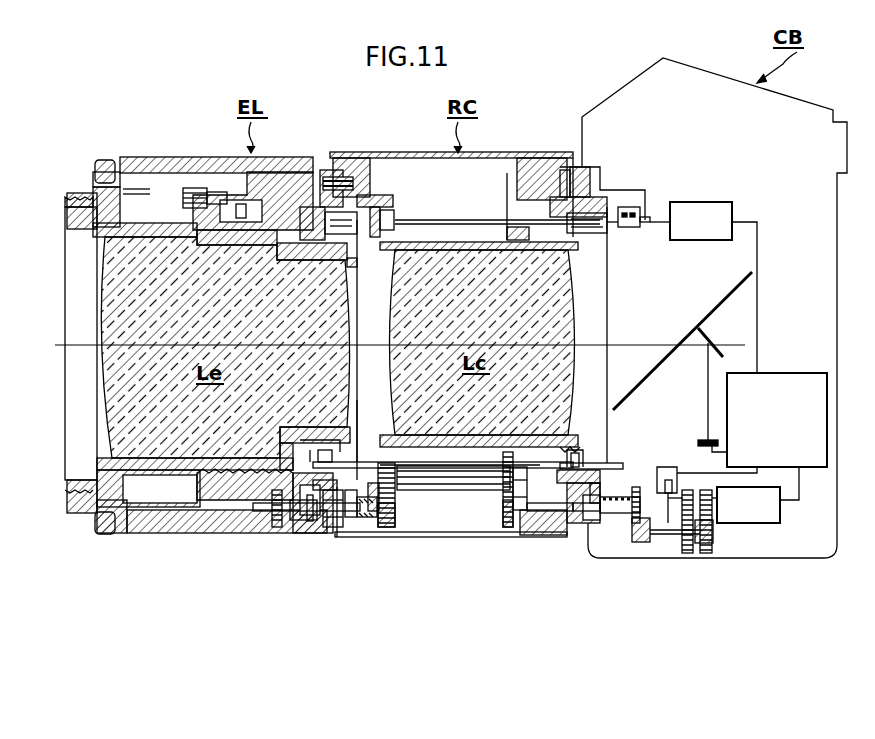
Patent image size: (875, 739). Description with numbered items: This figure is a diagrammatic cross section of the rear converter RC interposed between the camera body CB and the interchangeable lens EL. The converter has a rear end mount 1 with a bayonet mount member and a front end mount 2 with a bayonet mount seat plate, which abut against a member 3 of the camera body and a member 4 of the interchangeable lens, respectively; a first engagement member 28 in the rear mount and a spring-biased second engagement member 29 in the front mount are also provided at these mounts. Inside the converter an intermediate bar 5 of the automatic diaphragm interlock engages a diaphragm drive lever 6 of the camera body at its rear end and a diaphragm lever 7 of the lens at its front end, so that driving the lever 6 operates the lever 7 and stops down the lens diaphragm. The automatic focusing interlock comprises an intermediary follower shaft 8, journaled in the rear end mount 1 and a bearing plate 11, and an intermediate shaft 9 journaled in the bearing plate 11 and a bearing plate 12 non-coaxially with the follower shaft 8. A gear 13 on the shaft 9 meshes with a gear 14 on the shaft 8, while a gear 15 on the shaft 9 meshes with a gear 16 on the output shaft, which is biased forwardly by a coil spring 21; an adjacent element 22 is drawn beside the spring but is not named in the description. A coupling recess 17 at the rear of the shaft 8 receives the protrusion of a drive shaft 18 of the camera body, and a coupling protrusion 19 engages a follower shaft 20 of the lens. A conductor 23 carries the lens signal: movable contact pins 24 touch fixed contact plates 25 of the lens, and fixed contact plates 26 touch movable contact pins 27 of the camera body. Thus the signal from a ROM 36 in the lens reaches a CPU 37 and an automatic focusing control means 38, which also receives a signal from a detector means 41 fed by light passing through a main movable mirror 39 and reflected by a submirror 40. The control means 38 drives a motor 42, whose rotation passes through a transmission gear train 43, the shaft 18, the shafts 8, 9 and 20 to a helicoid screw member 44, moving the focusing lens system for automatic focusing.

The rear end mount 1 is at (563, 222).
The front end mount 2 is at (278, 246).
The member of the camera body 3 is at (600, 170).
The member of the interchangeable lens 4 is at (291, 157).
The intermediate bar 5 is at (447, 460).
The diaphragm drive lever 6 is at (613, 468).
The diaphragm lever 7 is at (344, 460).
The intermediary follower shaft 8 is at (547, 510).
The intermediate shaft 9 is at (447, 470).
The bearing plate 11 is at (517, 532).
The bearing plate 12 is at (389, 514).
The gear 13 is at (507, 484).
The gear 14 is at (502, 520).
The gear 15 is at (394, 479).
The gear 16 is at (395, 514).
The coupling recess 17 is at (574, 520).
The drive shaft 18 is at (620, 510).
The coupling protrusion 19 is at (327, 520).
The follower shaft 20 is at (293, 514).
The coil spring 21 is at (365, 520).
The bearing 22 is at (330, 514).
The conductor 23 is at (456, 222).
The movable contact pins 24 is at (357, 235).
The fixed contact plates 25 is at (334, 252).
The fixed contact plates 26 is at (603, 233).
The movable contact pins 27 is at (620, 227).
The first engagement member 28 is at (572, 167).
The second engagement member 29 is at (320, 170).
The ROM 36 is at (302, 250).
The CPU 37 is at (695, 200).
The automatic focusing control means 38 is at (780, 373).
The main movable mirror 39 is at (717, 302).
The submirror 40 is at (721, 346).
The detector means 41 is at (700, 440).
The motor 42 is at (780, 521).
The transmission gear train 43 is at (714, 546).
The helicoid screw member 44 is at (243, 503).